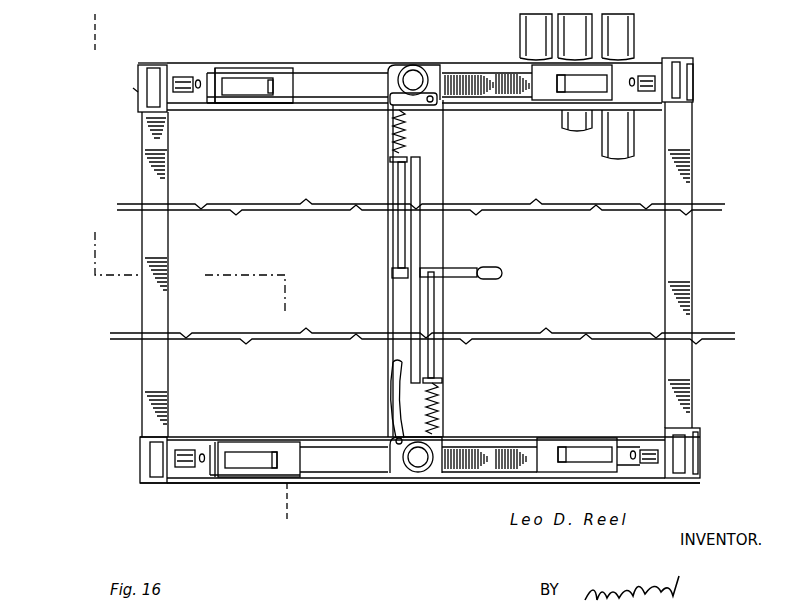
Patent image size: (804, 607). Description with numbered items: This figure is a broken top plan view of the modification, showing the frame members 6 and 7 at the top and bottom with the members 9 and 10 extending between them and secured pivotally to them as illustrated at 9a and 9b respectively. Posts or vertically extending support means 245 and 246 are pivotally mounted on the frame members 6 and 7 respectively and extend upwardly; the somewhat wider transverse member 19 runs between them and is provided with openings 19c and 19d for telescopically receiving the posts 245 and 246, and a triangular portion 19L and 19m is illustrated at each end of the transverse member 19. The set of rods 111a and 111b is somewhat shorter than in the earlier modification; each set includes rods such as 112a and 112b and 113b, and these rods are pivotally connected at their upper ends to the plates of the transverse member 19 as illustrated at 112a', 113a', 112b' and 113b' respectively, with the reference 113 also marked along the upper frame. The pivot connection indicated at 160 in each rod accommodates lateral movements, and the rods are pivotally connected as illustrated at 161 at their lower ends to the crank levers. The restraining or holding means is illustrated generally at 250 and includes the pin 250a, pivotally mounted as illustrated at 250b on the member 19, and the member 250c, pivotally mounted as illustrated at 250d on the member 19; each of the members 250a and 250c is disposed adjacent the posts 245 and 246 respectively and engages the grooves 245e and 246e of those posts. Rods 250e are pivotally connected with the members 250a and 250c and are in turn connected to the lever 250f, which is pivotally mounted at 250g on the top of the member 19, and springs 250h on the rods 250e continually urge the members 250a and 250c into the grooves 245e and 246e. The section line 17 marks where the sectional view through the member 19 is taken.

The frame member 6 is at (654, 62).
The frame member 7 is at (700, 476).
The member 9 is at (162, 257).
The pivotal securement 9a is at (138, 98).
The pivotal securement 9b is at (695, 80).
The member 10 is at (692, 252).
The section line 17 is at (86, 33).
The transverse member 19 is at (445, 183).
The triangular portion 19L is at (332, 85).
The opening 19c is at (430, 68).
The opening 19d is at (431, 470).
The triangular portion 19m is at (322, 460).
The set of rods 111a is at (258, 58).
The set of rods 111b is at (219, 442).
The rod 112a is at (249, 117).
The pivotal connection 112a' is at (270, 69).
The rod 112b is at (234, 490).
The pivotal connection 112b' is at (271, 444).
The rollers 113 is at (595, 86).
The pivotal connection 113a' is at (564, 100).
The rod 113b is at (624, 432).
The pivotal connection 113b' is at (577, 436).
The pivot connection 160 is at (200, 80).
The pivotal connection 161 is at (181, 77).
The post 245 is at (413, 80).
The groove 245e is at (408, 68).
The post 246 is at (406, 462).
The groove 246e is at (437, 443).
The restraining or holding means 250 is at (389, 148).
The pin 250a is at (414, 98).
The pivotal mounting 250b is at (440, 103).
The member 250c is at (396, 398).
The pivotal mounting 250d is at (393, 368).
The rod 250e is at (400, 253).
The lever 250f is at (502, 276).
The pivotal mounting 250g is at (420, 268).
The spring 250h is at (392, 140).